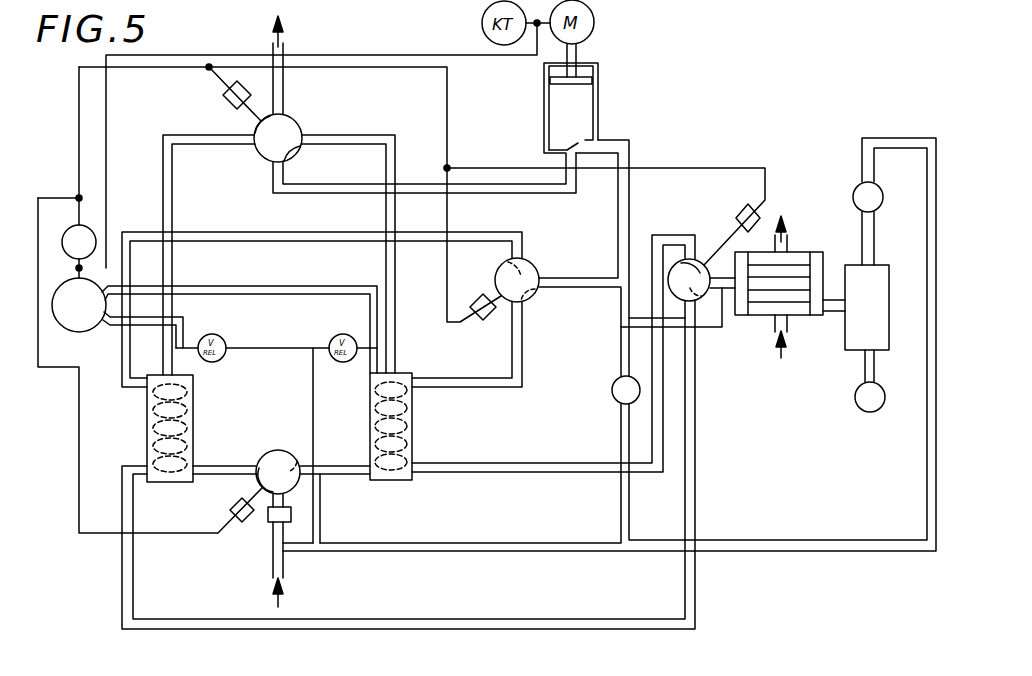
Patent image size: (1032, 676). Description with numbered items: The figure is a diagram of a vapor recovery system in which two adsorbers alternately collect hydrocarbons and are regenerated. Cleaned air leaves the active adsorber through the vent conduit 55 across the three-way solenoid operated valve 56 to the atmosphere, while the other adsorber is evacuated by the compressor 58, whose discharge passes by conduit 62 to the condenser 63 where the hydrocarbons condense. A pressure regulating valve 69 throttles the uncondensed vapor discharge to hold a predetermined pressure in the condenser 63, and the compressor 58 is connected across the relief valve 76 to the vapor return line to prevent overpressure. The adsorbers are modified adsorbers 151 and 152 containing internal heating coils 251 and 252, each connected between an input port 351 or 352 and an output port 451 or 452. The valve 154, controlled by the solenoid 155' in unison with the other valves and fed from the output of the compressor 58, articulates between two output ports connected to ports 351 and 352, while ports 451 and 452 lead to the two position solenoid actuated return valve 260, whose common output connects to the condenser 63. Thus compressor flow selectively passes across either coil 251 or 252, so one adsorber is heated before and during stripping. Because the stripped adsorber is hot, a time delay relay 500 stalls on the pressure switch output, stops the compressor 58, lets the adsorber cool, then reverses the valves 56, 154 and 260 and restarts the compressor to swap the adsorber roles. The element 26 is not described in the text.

The time delay relay 500 is at (97, 234).
The compressor 58 is at (599, 90).
The conduit 62 is at (630, 152).
The vent conduit 55 is at (288, 97).
The three-way solenoid operated valve 56 is at (259, 162).
The solenoid 155' is at (324, 206).
The valve 154 is at (531, 269).
The input port 352 is at (416, 376).
The modified adsorber 152 is at (414, 405).
The heating coil 252 is at (414, 441).
The output port 451 is at (414, 480).
The modified adsorber 151 is at (197, 386).
The heating coil 251 is at (195, 419).
The input port 351 is at (146, 386).
The relief valve 76 is at (612, 390).
The pressure regulating valve 69 is at (857, 188).
The output port 452 is at (196, 480).
The two position solenoid actuated return valve 260 is at (695, 316).
The condenser 63 is at (811, 318).
The reservoir 26 is at (848, 346).